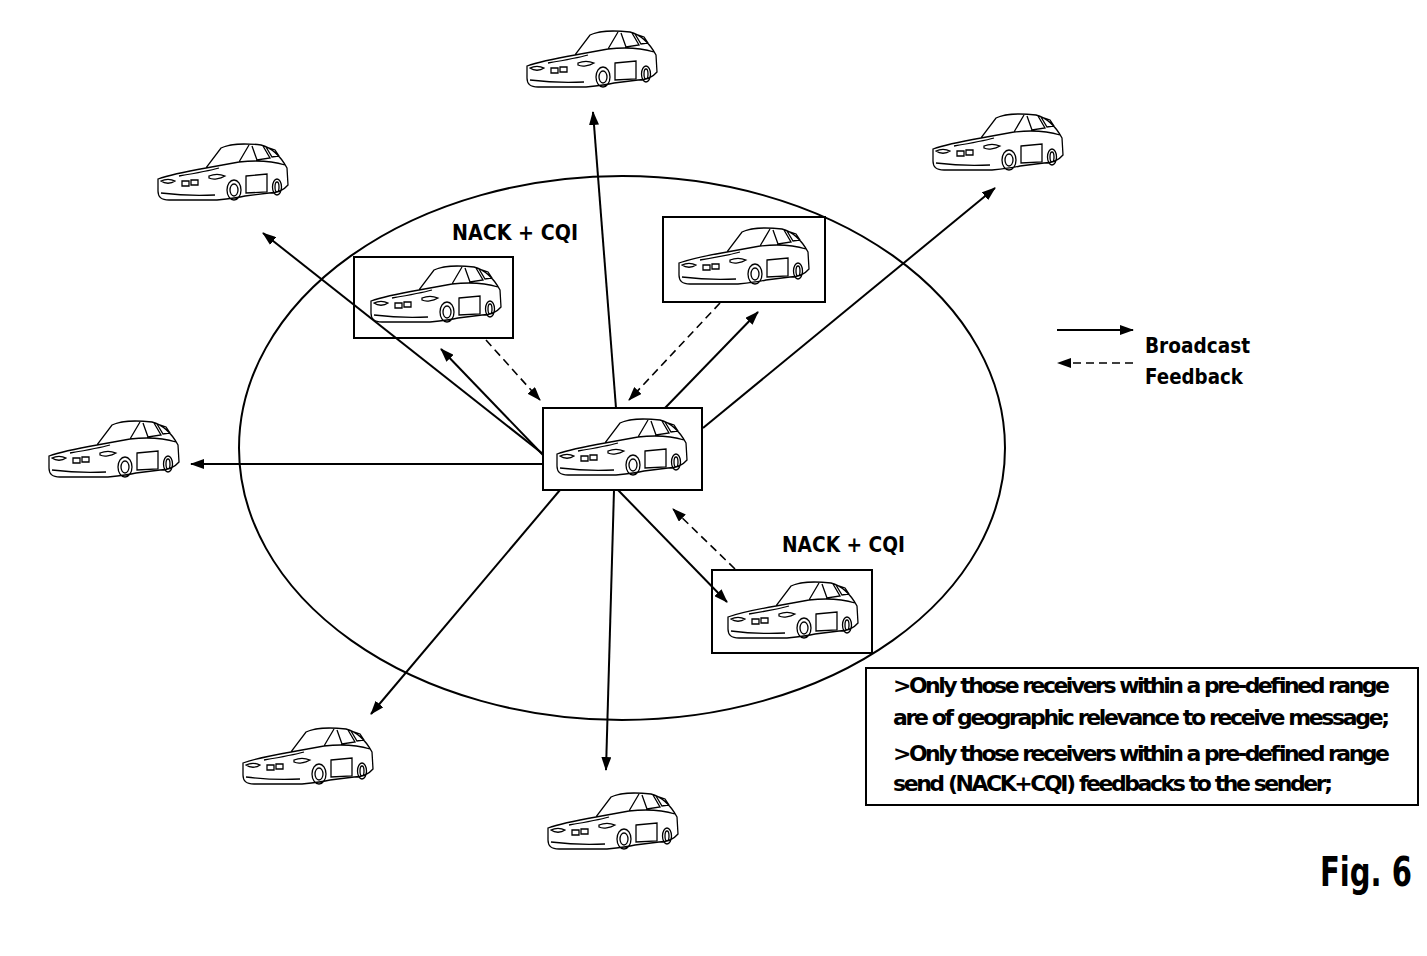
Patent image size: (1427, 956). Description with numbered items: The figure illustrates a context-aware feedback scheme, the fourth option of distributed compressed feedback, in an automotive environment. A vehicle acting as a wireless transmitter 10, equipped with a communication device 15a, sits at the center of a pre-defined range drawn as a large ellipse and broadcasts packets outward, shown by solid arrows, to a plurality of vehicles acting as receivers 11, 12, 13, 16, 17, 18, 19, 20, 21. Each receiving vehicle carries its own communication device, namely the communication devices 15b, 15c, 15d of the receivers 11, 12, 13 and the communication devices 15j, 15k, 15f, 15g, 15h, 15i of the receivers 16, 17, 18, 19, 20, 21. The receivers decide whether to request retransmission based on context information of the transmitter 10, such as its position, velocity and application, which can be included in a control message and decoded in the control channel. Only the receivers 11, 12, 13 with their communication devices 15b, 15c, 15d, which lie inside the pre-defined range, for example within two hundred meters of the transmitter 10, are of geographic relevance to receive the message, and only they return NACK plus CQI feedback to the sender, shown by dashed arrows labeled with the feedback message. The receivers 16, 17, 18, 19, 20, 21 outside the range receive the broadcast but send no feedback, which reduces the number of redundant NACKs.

The transmitter 10 is at (683, 440).
The receiver 11 is at (437, 268).
The receiver 12 is at (748, 231).
The receiver 13 is at (856, 604).
The communication device 15a is at (657, 459).
The communication device 15b is at (471, 305).
The communication device 15c is at (778, 266).
The communication device 15d is at (828, 625).
The communication device 15f is at (648, 833).
The communication device 15g is at (343, 768).
The communication device 15h is at (148, 462).
The communication device 15i is at (256, 184).
The communication device 15j is at (628, 71).
The communication device 15k is at (1031, 155).
The receiver 16 is at (655, 52).
The receiver 17 is at (1060, 135).
The receiver 18 is at (675, 814).
The receiver 19 is at (370, 749).
The receiver 20 is at (176, 441).
The receiver 21 is at (285, 165).